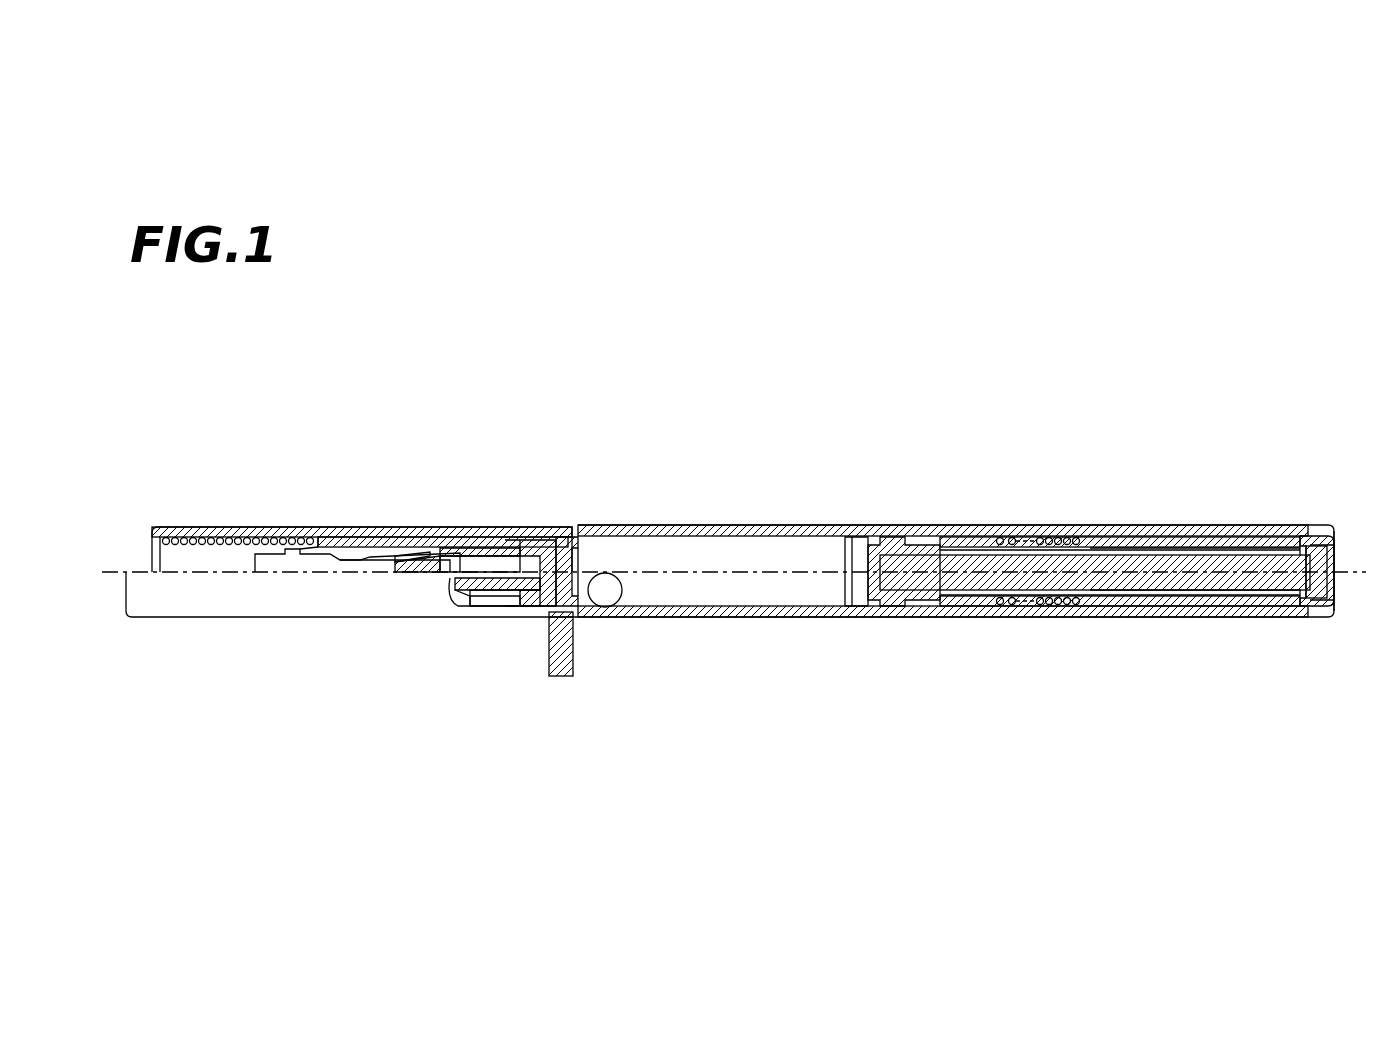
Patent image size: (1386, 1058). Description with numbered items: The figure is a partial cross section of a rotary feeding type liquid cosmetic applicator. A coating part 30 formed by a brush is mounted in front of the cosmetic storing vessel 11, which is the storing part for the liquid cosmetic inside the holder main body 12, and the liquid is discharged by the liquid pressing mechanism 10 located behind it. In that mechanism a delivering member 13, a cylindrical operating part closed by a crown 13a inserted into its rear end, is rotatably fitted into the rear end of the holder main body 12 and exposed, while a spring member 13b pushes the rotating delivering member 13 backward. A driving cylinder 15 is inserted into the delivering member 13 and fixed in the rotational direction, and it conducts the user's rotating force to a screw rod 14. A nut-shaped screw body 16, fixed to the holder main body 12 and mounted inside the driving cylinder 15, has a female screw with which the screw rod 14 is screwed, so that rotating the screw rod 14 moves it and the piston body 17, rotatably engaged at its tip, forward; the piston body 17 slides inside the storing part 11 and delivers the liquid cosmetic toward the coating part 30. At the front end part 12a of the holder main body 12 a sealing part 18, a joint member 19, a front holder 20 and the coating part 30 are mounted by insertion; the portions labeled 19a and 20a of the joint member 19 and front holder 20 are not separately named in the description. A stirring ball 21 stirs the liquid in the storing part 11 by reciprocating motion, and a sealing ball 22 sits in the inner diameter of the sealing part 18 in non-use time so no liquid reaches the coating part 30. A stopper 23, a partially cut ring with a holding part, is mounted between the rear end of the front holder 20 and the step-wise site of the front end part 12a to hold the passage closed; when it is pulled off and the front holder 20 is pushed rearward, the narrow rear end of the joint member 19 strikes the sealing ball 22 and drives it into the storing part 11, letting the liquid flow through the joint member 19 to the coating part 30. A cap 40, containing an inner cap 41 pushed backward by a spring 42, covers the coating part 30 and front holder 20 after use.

The liquid pressing mechanism 10 is at (1051, 526).
The cosmetic storing vessel 11 is at (782, 526).
The holder main body 12 is at (730, 618).
The front end part 12a is at (558, 526).
The delivering member 13 is at (1297, 526).
The crown 13a is at (1338, 536).
The spring member 13b is at (1078, 534).
The screw rod 14 is at (987, 552).
The driving cylinder 15 is at (1200, 556).
The screw body 16 is at (930, 526).
The piston body 17 is at (862, 526).
The sealing part 18 is at (518, 526).
The joint member 19 is at (463, 526).
The inner sleeve tip 19a is at (442, 526).
The front holder 20 is at (481, 526).
The outer sleeve tip 20a is at (425, 526).
The stirring ball 21 is at (611, 596).
The sealing ball 22 is at (530, 608).
The stopper 23 is at (573, 658).
The coating part 30 is at (317, 526).
The cap 40 is at (228, 526).
The inner cap 41 is at (377, 526).
The spring 42 is at (168, 526).